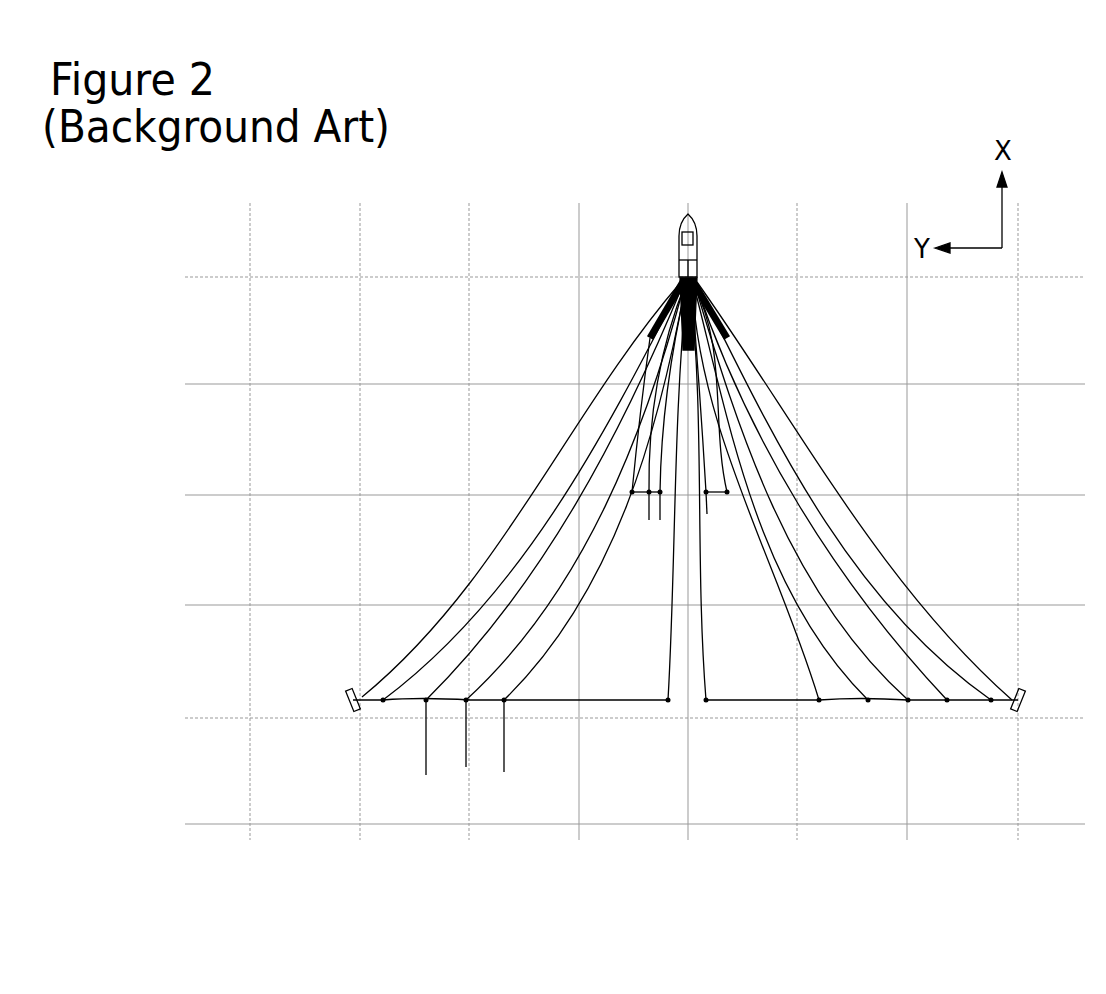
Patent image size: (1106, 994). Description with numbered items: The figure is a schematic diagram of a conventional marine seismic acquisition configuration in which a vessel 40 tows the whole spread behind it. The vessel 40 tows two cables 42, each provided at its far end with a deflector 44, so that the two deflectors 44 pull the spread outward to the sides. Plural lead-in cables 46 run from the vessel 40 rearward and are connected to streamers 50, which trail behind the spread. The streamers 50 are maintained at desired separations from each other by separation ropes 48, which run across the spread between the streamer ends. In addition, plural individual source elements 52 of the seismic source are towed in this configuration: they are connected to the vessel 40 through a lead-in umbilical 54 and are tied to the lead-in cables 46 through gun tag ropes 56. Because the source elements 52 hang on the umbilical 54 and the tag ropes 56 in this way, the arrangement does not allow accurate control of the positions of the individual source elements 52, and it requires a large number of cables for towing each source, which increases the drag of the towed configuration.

The vessel 40 is at (779, 201).
The cable 42 is at (545, 478).
The deflector 44 is at (350, 700).
The lead-in cable 46 is at (877, 590).
The separation rope 48 is at (835, 698).
The streamer 50 is at (505, 748).
The individual source element 52 is at (709, 515).
The lead-in umbilical 54 is at (706, 490).
The gun tag rope 56 is at (722, 490).